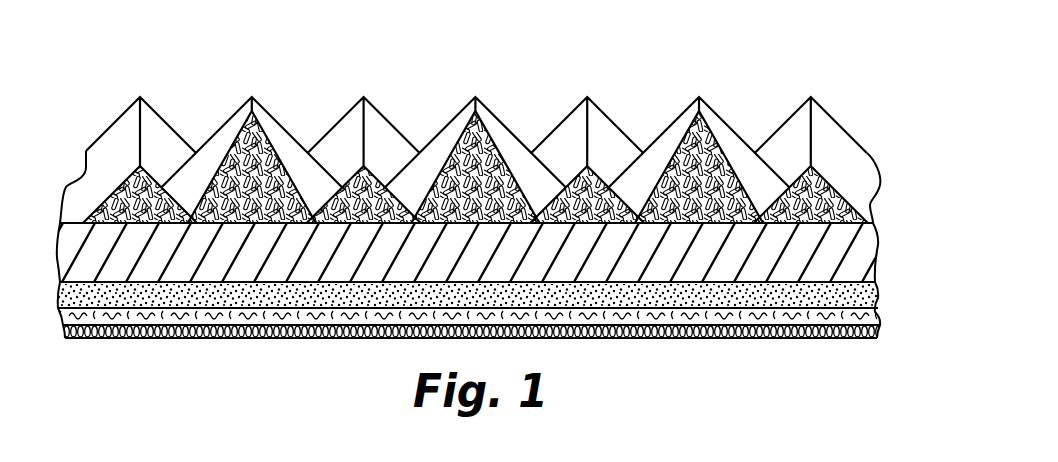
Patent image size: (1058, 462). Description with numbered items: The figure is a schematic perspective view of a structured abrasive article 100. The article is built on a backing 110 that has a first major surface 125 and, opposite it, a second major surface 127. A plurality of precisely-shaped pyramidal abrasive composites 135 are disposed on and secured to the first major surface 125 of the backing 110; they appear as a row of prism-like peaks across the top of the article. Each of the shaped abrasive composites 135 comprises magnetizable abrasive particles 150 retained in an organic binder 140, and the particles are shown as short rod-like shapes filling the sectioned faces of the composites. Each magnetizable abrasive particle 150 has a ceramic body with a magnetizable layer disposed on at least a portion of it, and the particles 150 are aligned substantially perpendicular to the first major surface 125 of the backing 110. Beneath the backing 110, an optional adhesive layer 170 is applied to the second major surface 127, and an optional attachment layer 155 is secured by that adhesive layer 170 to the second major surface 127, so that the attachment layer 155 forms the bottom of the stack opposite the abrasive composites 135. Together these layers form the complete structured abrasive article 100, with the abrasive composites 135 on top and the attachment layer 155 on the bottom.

The structured abrasive article 100 is at (722, 36).
The backing 110 is at (868, 257).
The first major surface 125 is at (76, 222).
The second major surface 127 is at (88, 283).
The precisely-shaped pyramidal abrasive composites 135 is at (453, 133).
The organic binder 140 is at (236, 150).
The magnetizable abrasive particles 150 is at (513, 158).
The attachment layer 155 is at (885, 308).
The adhesive layer 170 is at (865, 293).